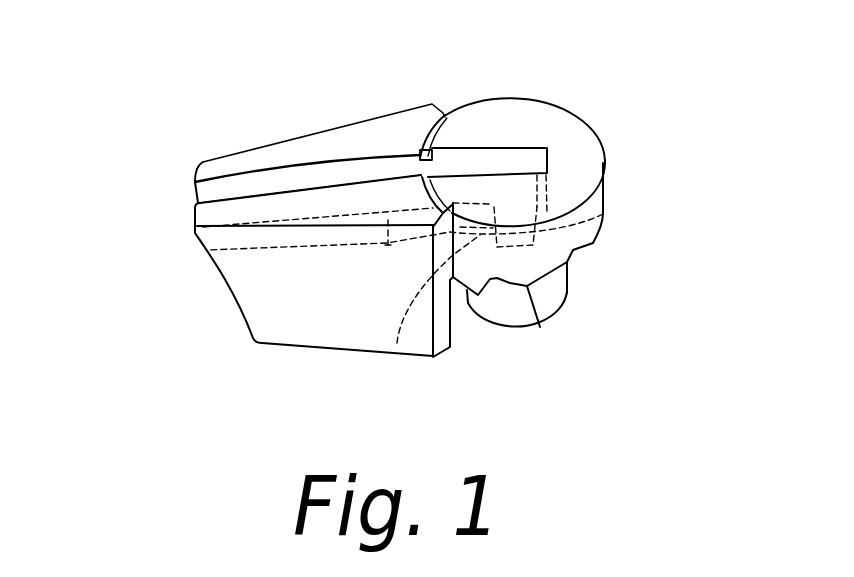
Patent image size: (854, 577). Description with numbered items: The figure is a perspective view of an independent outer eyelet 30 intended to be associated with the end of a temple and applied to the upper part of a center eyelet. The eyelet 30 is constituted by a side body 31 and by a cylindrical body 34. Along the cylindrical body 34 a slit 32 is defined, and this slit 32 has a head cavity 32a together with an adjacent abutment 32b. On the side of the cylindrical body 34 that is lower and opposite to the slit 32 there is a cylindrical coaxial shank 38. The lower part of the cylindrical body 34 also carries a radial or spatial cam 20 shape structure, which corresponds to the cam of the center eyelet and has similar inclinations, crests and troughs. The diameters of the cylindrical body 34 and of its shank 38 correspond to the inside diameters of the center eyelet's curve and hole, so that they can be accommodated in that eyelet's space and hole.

The independent eyelet 30 is at (205, 306).
The side body 31 is at (353, 145).
The slit 32 is at (197, 205).
The head cavity 32a is at (603, 214).
The abutment 32b is at (397, 343).
The cylindrical body 34 is at (543, 127).
The cylindrical coaxial shank 38 is at (510, 307).
The cam 20 is at (540, 327).